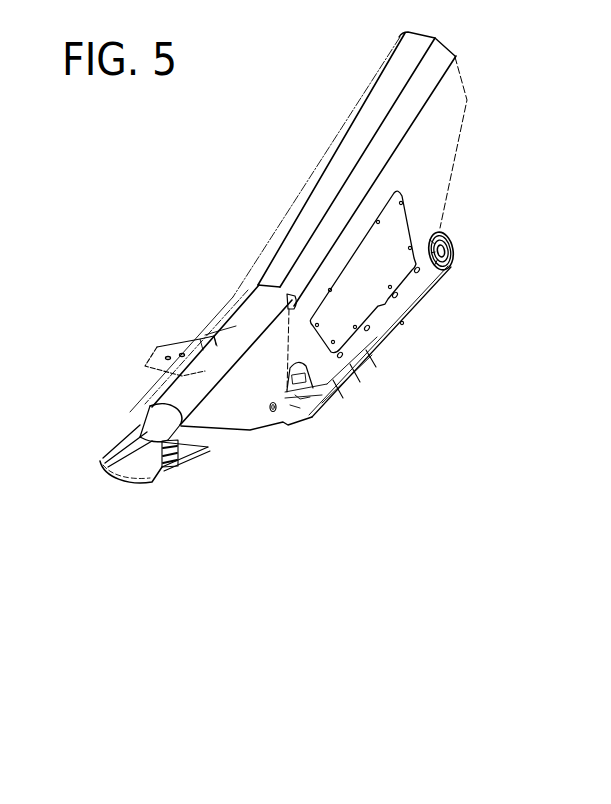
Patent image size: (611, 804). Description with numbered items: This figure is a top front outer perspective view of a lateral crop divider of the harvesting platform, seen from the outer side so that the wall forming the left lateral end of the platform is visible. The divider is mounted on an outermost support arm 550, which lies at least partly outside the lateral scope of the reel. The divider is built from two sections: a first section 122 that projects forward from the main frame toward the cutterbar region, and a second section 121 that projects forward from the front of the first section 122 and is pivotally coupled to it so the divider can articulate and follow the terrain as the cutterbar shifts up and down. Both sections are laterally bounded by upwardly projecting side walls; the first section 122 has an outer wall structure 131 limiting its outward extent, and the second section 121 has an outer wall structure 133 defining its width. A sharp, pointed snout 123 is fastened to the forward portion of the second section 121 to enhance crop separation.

The second section 121 is at (227, 330).
The first section 122 is at (318, 186).
The snout 123 is at (135, 466).
The outer wall structure 131 is at (423, 170).
The outer wall structure 133 is at (218, 430).
The outermost support arm 550 is at (423, 283).